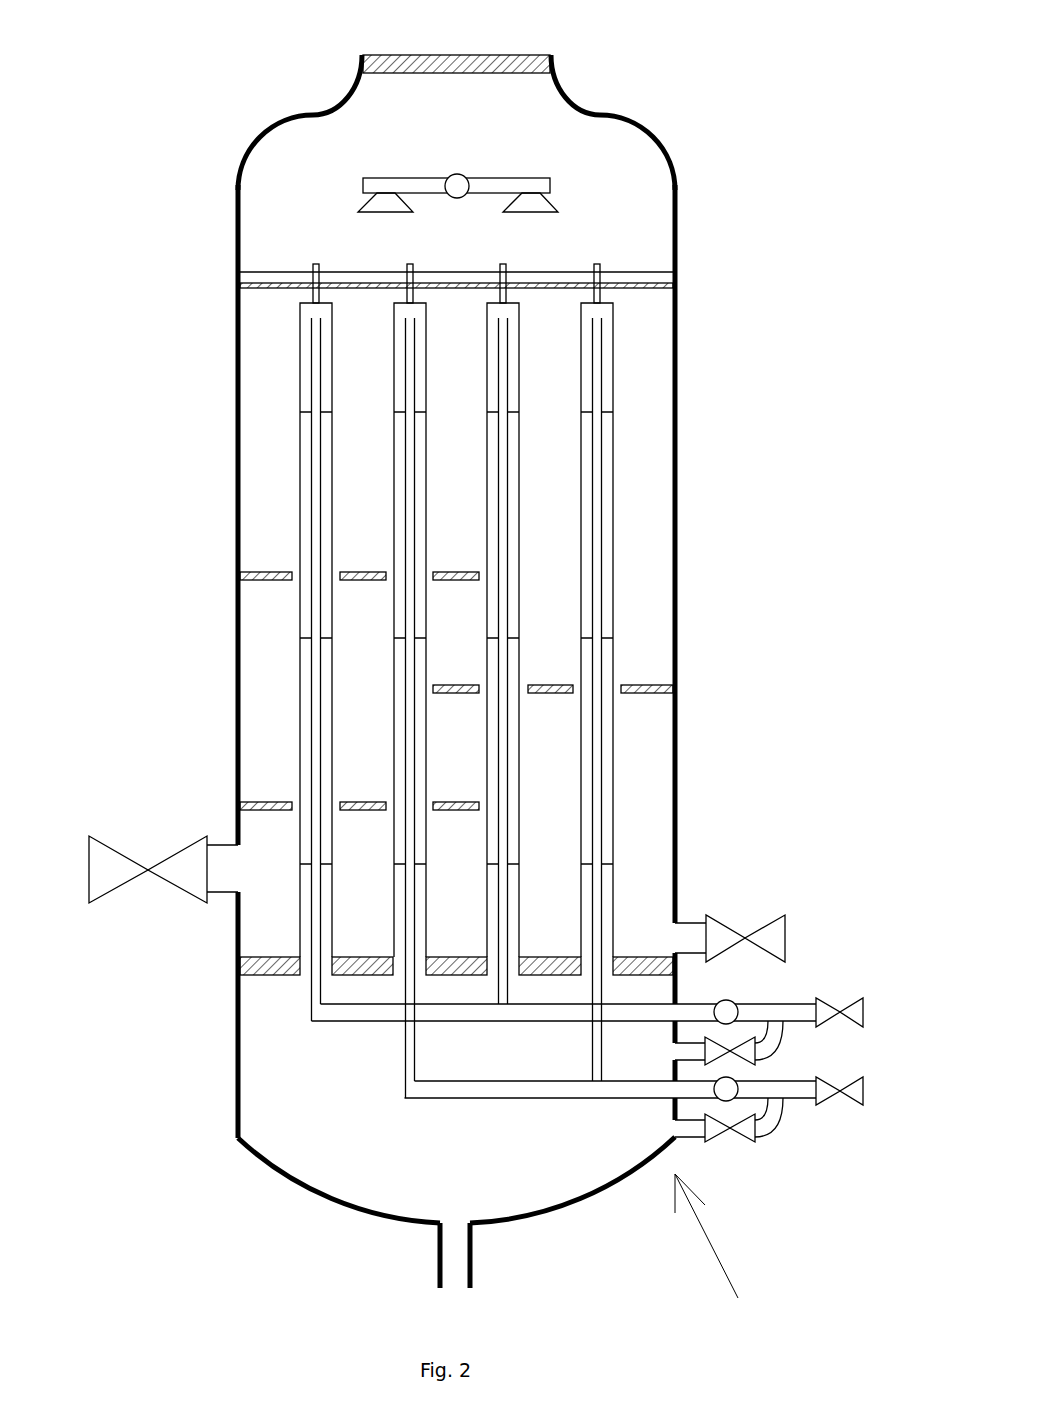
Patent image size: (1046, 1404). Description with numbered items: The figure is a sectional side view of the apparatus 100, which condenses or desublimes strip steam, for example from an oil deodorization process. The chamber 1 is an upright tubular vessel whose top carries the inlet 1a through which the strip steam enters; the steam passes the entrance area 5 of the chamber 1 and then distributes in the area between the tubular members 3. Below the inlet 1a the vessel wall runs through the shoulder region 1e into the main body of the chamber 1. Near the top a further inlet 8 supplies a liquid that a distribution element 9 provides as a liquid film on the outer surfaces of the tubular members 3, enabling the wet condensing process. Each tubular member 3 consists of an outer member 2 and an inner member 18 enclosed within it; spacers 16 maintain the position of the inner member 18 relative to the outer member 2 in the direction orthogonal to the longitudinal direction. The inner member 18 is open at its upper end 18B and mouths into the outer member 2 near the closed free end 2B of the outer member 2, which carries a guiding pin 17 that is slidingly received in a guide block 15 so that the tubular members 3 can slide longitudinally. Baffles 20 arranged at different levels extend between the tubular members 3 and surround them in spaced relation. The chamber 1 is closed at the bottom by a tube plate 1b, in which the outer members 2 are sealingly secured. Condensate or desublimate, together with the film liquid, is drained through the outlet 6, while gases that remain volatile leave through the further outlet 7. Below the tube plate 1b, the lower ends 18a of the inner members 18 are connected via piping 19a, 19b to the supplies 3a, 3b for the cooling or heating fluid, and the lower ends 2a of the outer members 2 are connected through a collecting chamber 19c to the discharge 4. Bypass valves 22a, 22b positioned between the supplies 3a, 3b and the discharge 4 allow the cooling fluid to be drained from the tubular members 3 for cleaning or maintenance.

The chamber 1 is at (237, 632).
The inlet 1a is at (417, 55).
The tube plate 1b is at (237, 977).
The vessel neck 1e is at (333, 100).
The outer member 2 is at (300, 490).
The lower end of outer member 2a is at (618, 960).
The upper end of outer member 2B is at (612, 302).
The tubular member 3 is at (613, 522).
The supply 3a is at (863, 1010).
The supply 3b is at (863, 1089).
The discharge 4 is at (457, 1275).
The entrance area 5 is at (565, 135).
The outlet 6 is at (737, 937).
The further outlet 7 is at (182, 848).
The further inlet 8 is at (445, 182).
The distribution element 9 is at (380, 202).
The guide block 15 is at (283, 278).
The spacer 16 is at (305, 410).
The guiding pin 17 is at (600, 267).
The inner member 18 is at (312, 363).
The lower end of inner member 18a is at (312, 1007).
The inner tube 18B is at (602, 317).
The piping 19a is at (457, 1021).
The piping 19b is at (515, 1098).
The collecting chamber 19c is at (518, 1183).
The baffles 20 is at (260, 800).
The bypass valve 22a is at (757, 1052).
The bypass valve 22b is at (753, 1142).
The apparatus 100 is at (714, 1251).